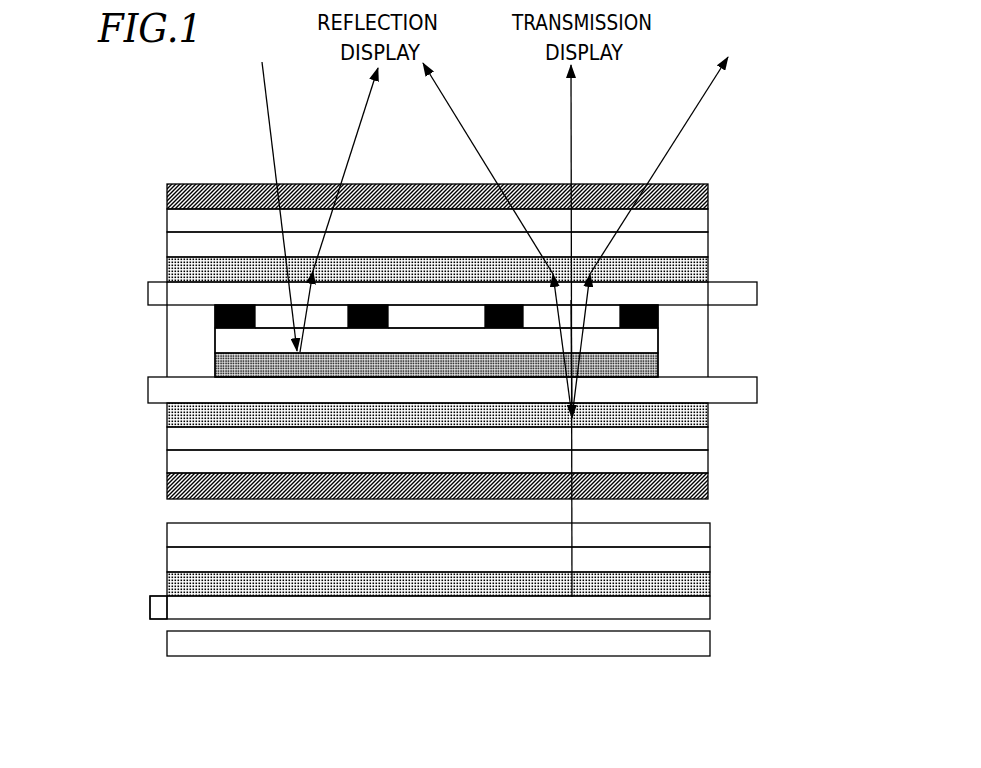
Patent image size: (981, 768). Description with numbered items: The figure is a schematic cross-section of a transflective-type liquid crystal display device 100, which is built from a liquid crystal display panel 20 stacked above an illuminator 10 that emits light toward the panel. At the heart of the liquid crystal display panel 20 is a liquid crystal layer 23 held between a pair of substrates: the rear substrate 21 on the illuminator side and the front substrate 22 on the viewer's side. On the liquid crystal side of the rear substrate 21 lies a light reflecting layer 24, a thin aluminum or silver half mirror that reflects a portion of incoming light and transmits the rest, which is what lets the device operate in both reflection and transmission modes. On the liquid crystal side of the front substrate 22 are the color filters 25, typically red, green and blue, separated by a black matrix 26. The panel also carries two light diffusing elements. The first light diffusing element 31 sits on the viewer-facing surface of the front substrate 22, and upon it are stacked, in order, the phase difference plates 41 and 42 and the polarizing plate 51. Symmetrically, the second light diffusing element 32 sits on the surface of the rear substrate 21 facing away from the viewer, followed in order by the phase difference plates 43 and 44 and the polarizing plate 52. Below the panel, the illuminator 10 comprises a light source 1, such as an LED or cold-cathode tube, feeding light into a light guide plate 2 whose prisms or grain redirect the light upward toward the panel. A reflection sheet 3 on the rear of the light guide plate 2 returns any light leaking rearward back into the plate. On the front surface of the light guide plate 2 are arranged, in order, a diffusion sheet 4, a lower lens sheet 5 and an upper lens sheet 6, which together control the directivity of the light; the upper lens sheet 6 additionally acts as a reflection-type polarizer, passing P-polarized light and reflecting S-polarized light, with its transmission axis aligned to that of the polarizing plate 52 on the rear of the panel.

The liquid crystal display device 100 is at (770, 122).
The liquid crystal display panel 20 is at (93, 182).
The illuminator 10 is at (92, 525).
The polarizing plate 51 is at (697, 197).
The phase difference plate 42 is at (702, 220).
The phase difference plate 41 is at (693, 248).
The first light diffusing element 31 is at (708, 267).
The front substrate 22 is at (755, 287).
The black matrix 26 is at (215, 322).
The liquid crystal layer 23 is at (653, 337).
The light reflecting layer 24 is at (647, 363).
The rear substrate 21 is at (753, 388).
The second light diffusing element 32 is at (712, 415).
The phase difference plate 43 is at (697, 438).
The phase difference plate 44 is at (708, 460).
The polarizing plate 52 is at (710, 482).
The color filters 25 is at (272, 315).
The upper lens sheet 6 is at (705, 533).
The lower lens sheet 5 is at (705, 560).
The diffusion sheet 4 is at (710, 582).
The light guide plate 2 is at (707, 610).
The light source 1 is at (150, 607).
The reflection sheet 3 is at (703, 645).